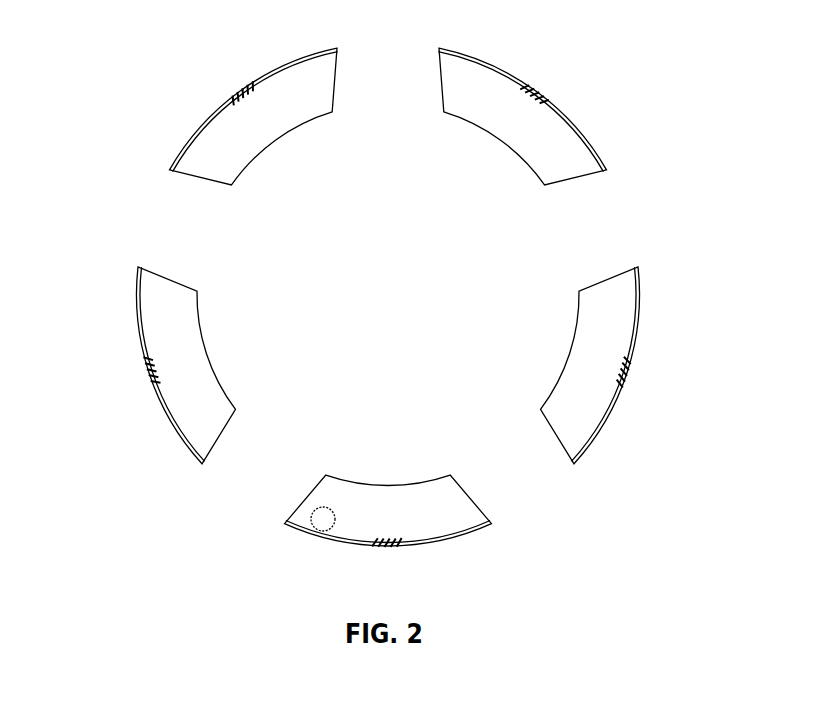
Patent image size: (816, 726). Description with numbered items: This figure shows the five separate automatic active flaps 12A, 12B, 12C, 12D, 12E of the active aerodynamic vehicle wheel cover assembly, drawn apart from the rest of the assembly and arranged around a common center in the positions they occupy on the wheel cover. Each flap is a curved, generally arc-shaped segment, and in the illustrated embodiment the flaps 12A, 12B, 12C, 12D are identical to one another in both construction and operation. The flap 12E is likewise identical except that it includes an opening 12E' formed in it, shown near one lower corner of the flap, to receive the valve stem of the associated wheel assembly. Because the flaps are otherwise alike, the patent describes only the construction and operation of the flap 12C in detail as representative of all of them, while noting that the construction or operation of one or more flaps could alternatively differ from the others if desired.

The flap 12A is at (153, 320).
The flap 12B is at (293, 87).
The flap 12C is at (563, 145).
The flap 12D is at (622, 320).
The flap 12E is at (411, 520).
The opening 12E' is at (364, 546).